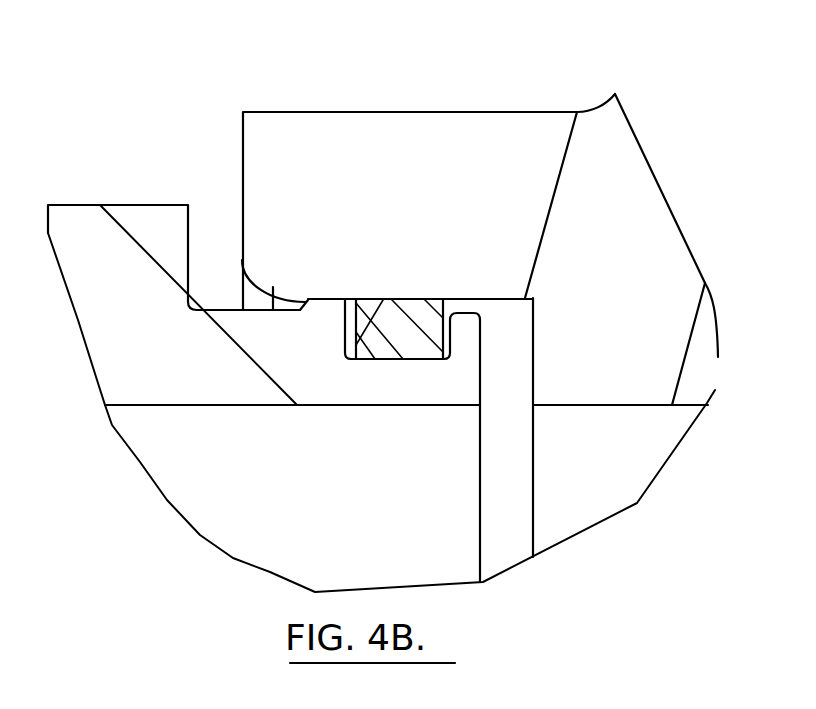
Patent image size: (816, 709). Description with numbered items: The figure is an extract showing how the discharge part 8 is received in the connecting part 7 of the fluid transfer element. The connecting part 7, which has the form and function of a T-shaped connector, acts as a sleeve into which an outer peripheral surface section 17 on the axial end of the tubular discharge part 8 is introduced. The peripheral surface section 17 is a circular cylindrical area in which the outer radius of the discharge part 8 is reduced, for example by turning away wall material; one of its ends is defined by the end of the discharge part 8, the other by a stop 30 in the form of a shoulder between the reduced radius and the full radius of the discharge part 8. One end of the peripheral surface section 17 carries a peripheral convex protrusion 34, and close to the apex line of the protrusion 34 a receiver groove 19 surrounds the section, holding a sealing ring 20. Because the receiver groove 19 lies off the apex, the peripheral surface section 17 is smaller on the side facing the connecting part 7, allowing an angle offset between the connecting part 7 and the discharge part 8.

The connecting part 7 is at (547, 132).
The discharge part 8 is at (462, 492).
The peripheral surface section 17 is at (220, 310).
The receiver groove 19 is at (387, 303).
The sealing ring 20 is at (400, 328).
The stop 30 is at (187, 253).
The peripheral convex protrusion 34 is at (327, 310).